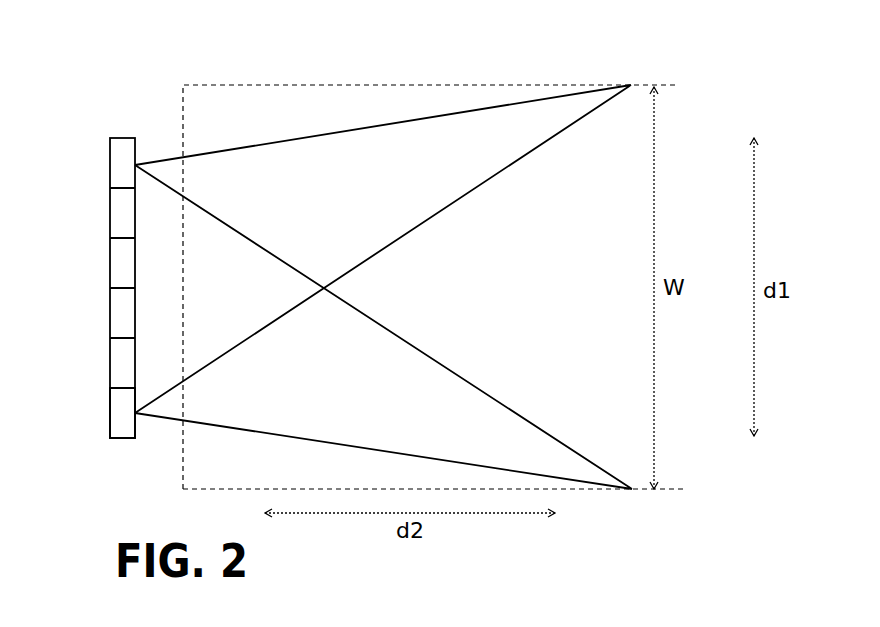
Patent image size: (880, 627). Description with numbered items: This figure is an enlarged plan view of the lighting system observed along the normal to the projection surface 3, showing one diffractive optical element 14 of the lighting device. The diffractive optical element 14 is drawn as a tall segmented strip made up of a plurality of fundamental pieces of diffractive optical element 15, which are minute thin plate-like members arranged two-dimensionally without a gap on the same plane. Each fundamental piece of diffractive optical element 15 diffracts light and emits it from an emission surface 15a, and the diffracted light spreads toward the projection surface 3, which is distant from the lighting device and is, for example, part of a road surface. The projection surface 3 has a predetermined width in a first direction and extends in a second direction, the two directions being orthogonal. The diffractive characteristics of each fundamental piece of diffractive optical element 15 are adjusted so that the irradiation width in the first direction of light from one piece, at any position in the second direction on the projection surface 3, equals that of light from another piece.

The projection surface 3 is at (503, 130).
The diffractive optical element 14 is at (120, 113).
The fundamental pieces of diffractive optical element 15 is at (117, 158).
The emission surfaces 15a is at (133, 398).